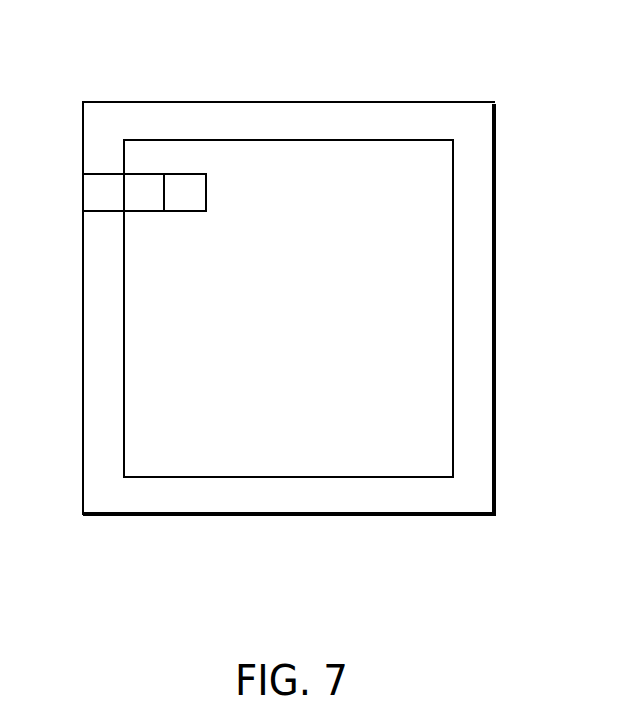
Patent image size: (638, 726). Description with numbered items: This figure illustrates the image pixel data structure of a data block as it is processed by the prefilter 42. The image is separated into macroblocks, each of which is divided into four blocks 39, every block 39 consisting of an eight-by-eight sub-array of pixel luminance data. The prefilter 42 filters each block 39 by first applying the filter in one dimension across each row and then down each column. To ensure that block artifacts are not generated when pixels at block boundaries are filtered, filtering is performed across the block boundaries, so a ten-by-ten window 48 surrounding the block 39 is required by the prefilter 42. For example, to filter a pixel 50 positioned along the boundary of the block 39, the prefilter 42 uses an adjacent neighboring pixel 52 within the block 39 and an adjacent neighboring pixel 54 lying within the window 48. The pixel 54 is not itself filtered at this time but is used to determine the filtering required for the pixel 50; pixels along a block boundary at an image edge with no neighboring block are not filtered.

The prefilter 42 is at (117, 117).
The 10×10 window 48 is at (105, 498).
The block 39 is at (431, 456).
The pixel 50 is at (138, 203).
The adjacent neighboring pixel 52 is at (195, 192).
The adjacent neighboring pixel 54 is at (93, 192).